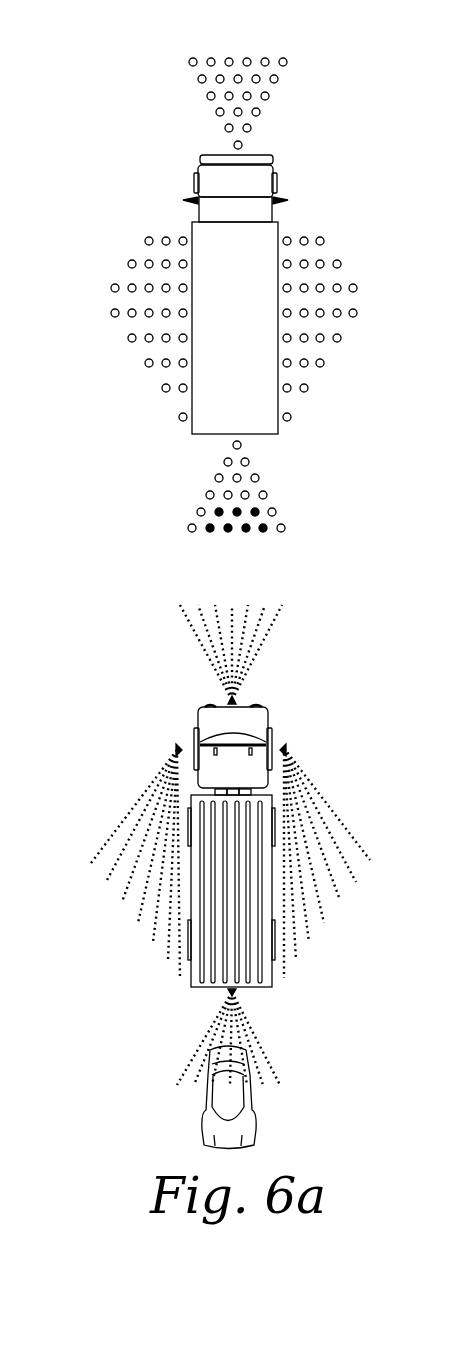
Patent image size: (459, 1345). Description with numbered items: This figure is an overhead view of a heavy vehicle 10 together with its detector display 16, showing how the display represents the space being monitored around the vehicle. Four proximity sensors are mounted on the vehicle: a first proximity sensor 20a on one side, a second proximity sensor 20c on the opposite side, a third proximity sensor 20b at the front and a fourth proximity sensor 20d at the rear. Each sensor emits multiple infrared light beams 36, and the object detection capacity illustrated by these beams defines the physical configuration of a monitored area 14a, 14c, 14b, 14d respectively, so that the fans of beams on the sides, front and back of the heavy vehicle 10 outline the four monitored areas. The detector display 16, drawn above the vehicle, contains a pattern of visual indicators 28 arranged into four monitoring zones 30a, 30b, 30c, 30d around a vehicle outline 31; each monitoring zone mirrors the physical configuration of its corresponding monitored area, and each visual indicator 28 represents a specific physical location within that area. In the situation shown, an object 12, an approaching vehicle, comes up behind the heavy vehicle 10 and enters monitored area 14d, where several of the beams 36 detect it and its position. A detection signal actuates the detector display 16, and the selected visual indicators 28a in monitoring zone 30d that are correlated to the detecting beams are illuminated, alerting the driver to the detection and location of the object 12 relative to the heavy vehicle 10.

The heavy vehicle 10 is at (258, 720).
The object 12 is at (240, 1110).
The monitored area 14a is at (140, 787).
The monitored area 14b is at (270, 654).
The monitored area 14c is at (335, 933).
The monitored area 14d is at (274, 1030).
The detector display 16 is at (295, 192).
The first proximity sensor 20a is at (178, 745).
The third proximity sensor 20b is at (236, 699).
The second proximity sensor 20c is at (286, 745).
The fourth proximity sensor 20d is at (228, 990).
The visual indicators 28 is at (129, 260).
The selected visual indicators 28a is at (247, 532).
The monitoring zone 30a is at (111, 346).
The monitoring zone 30b is at (246, 44).
The monitoring zone 30c is at (332, 380).
The monitoring zone 30d is at (281, 472).
The vehicle outline 31 is at (213, 424).
The light beams 36 is at (200, 640).